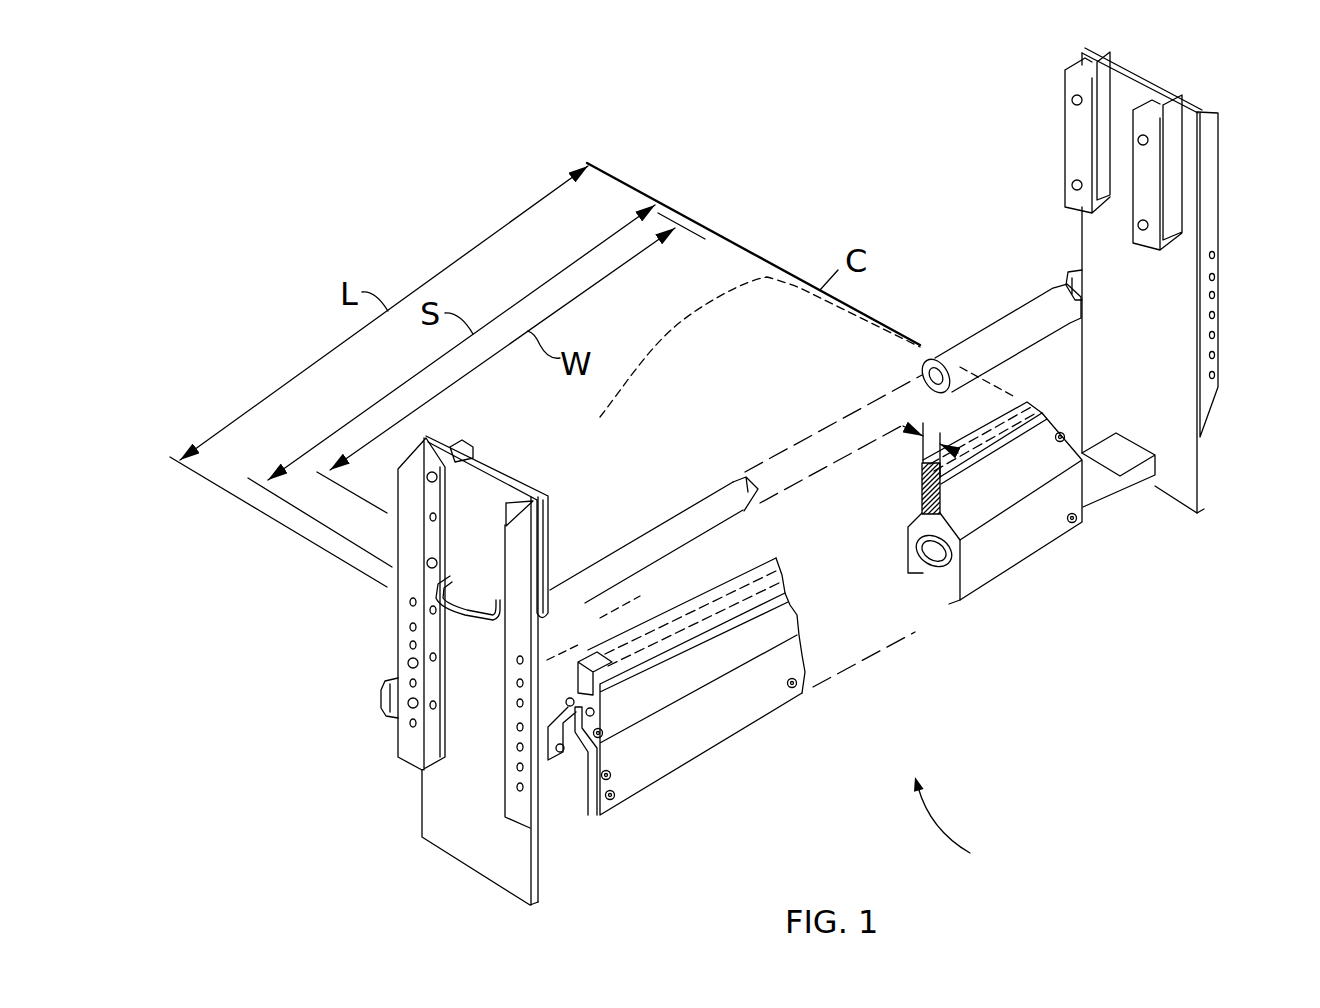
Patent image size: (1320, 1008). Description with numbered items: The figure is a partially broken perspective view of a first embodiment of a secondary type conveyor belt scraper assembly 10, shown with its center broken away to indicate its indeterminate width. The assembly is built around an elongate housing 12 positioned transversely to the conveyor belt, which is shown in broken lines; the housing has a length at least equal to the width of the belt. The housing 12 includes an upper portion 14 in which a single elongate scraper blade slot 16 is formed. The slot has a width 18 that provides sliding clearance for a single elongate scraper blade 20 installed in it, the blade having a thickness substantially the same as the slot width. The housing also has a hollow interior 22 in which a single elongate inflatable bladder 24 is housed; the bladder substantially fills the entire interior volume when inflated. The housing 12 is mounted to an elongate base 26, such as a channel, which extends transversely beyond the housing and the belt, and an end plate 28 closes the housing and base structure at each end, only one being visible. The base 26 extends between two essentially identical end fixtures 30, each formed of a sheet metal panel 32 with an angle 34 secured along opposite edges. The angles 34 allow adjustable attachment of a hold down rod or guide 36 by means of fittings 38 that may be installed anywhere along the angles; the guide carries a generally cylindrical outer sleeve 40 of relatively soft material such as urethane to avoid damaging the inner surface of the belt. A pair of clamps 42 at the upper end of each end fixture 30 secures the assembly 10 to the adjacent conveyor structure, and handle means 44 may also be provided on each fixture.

The conveyor belt scraper assembly 10 is at (973, 826).
The elongate housing 12 is at (1065, 584).
The upper portion 14 is at (787, 610).
The scraper blade slot 16 is at (921, 480).
The slot width 18 is at (937, 432).
The scraper blade 20 is at (702, 588).
The hollow interior 22 is at (912, 528).
The inflatable bladder 24 is at (948, 600).
The elongate base 26 is at (1160, 540).
The end plate 28 is at (583, 760).
The end fixture 30 is at (1240, 467).
The panel 32 is at (492, 813).
The angle 34 is at (1260, 282).
The hold down rod or guide 36 is at (924, 372).
The fitting 38 is at (1062, 278).
The cylindrical outer sleeve 40 is at (993, 322).
The clamp 42 is at (524, 480).
The handle means 44 is at (457, 600).